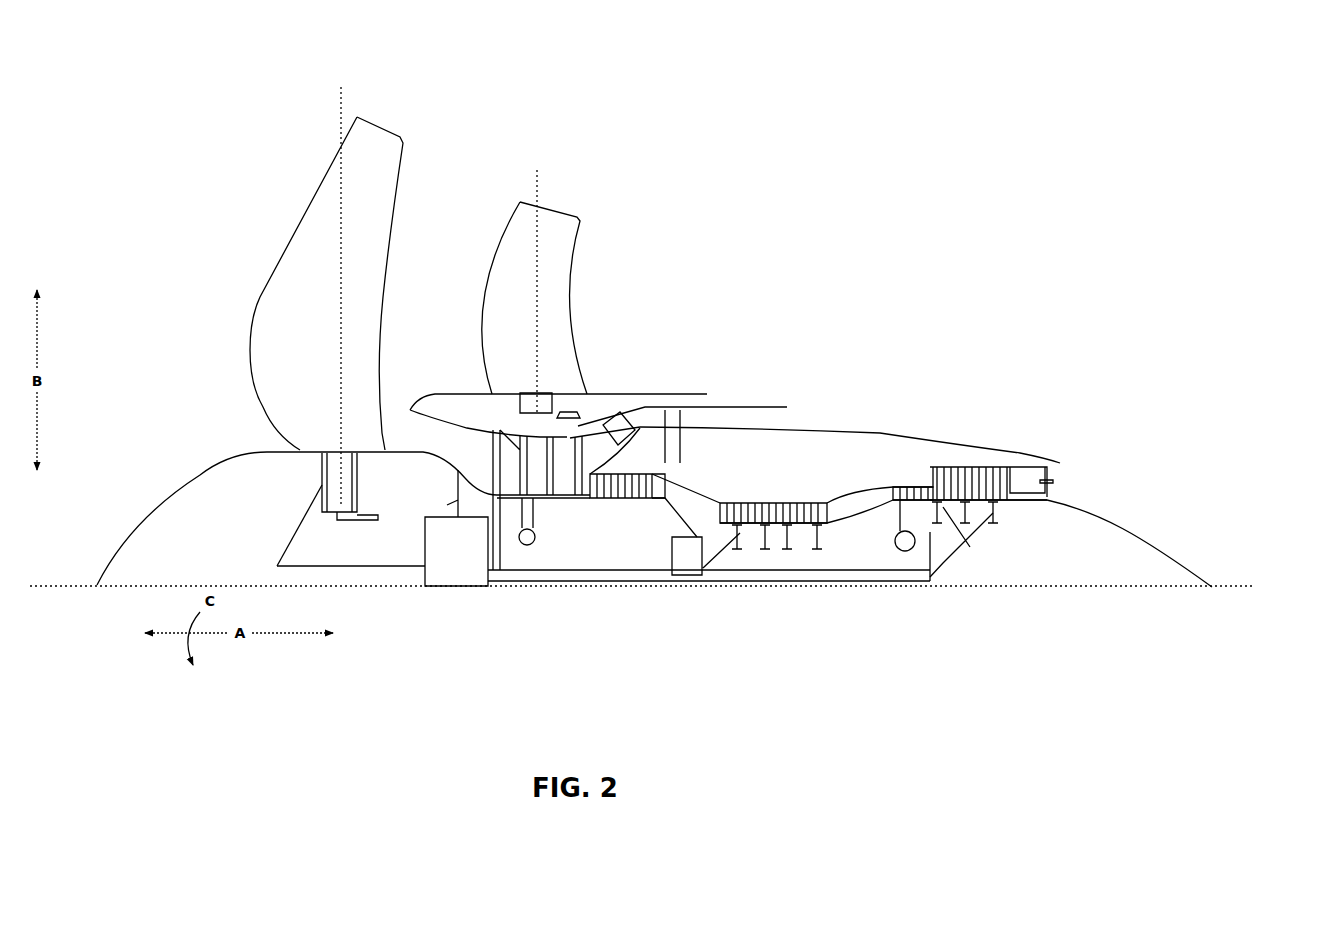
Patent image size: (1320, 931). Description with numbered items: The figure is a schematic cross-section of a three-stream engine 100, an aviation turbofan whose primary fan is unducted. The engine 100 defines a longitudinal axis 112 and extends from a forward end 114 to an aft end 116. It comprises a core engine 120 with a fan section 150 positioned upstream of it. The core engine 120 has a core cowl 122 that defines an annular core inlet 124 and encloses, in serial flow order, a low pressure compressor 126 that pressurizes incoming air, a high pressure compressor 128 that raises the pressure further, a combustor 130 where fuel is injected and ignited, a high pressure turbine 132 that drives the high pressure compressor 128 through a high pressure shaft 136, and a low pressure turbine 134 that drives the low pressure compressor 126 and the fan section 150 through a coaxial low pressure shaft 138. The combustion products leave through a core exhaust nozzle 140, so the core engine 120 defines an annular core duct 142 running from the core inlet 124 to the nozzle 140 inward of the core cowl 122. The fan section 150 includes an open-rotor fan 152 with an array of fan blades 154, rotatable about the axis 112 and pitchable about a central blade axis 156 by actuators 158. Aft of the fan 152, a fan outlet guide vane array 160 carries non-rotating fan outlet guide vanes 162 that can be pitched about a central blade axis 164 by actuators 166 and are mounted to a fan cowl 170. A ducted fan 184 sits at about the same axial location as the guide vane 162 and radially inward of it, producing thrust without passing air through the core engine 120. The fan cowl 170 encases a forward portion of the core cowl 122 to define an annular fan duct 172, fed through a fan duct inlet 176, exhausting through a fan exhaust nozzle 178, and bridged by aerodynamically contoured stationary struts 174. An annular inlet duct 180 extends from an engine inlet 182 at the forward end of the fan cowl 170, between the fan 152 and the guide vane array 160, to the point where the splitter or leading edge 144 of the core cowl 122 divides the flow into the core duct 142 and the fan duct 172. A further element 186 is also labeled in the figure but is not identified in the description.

The three-stream engine 100 is at (722, 145).
The longitudinal axis 112 is at (1250, 594).
The forward end 114 is at (97, 585).
The aft end 116 is at (1218, 582).
The core engine 120 is at (805, 493).
The core cowl 122 is at (807, 428).
The core inlet 124 is at (585, 490).
The low pressure compressor 126 is at (623, 512).
The high pressure compressor 128 is at (792, 542).
The combustor 130 is at (850, 522).
The high pressure turbine 132 is at (907, 473).
The low pressure turbine 134 is at (973, 457).
The high pressure shaft 136 is at (912, 533).
The low pressure shaft 138 is at (287, 547).
The core exhaust nozzle 140 is at (1053, 482).
The core duct 142 is at (867, 491).
The leading edge 144 is at (609, 515).
The fan section 150 is at (187, 160).
The fan 152 is at (213, 327).
The fan blades 154 is at (300, 233).
The central blade axis 156 is at (343, 112).
The actuators 158 is at (368, 512).
The fan outlet guide vane array 160 is at (458, 220).
The fan outlet guide vanes 162 is at (553, 288).
The central blade axis 164 is at (541, 188).
The actuators 166 is at (568, 412).
The fan cowl 170 is at (627, 393).
The fan duct 172 is at (645, 415).
The stationary struts 174 is at (687, 425).
The fan duct inlet 176 is at (585, 452).
The fan exhaust nozzle 178 is at (787, 410).
The inlet duct 180 is at (505, 480).
The engine inlet 182 is at (410, 427).
The ducted fan 184 is at (483, 394).
The support structure 186 is at (450, 557).